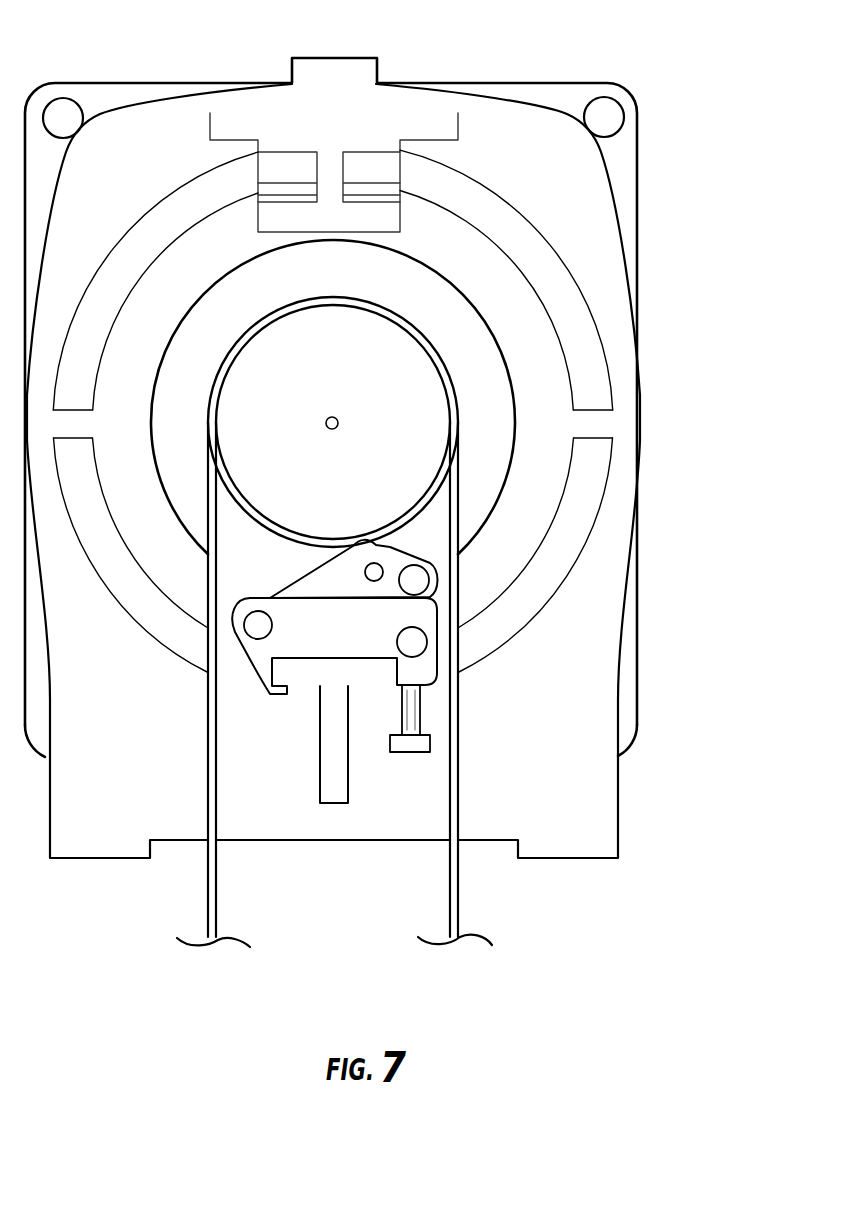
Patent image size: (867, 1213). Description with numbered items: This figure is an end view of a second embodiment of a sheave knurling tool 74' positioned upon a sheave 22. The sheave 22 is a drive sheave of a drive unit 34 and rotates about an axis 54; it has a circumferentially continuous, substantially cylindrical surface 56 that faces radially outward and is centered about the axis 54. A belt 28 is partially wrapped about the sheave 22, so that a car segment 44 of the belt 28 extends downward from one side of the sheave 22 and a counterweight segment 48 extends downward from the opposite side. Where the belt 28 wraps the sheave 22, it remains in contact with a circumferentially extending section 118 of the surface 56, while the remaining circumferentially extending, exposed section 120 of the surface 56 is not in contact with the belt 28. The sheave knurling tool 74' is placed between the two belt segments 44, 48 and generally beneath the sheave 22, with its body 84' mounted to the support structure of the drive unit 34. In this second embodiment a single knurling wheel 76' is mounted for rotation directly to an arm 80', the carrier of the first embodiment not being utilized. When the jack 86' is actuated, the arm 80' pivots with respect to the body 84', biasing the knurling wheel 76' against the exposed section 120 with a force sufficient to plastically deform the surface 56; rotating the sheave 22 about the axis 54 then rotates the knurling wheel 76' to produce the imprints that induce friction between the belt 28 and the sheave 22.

The sheave 22 is at (320, 276).
The belt 28 is at (475, 912).
The drive unit 34 is at (637, 165).
The car segment 44 is at (350, 734).
The counterweight segment 48 is at (207, 890).
The axis 54 is at (331, 417).
The surface 56 is at (236, 356).
The sheave knurling tool 74' is at (275, 733).
The knurling wheel 76' is at (416, 524).
The arm 80' is at (334, 577).
The body 84' is at (366, 733).
The jack 86' is at (471, 698).
The circumferentially extending section 118 is at (362, 312).
The exposed section 120 is at (329, 643).